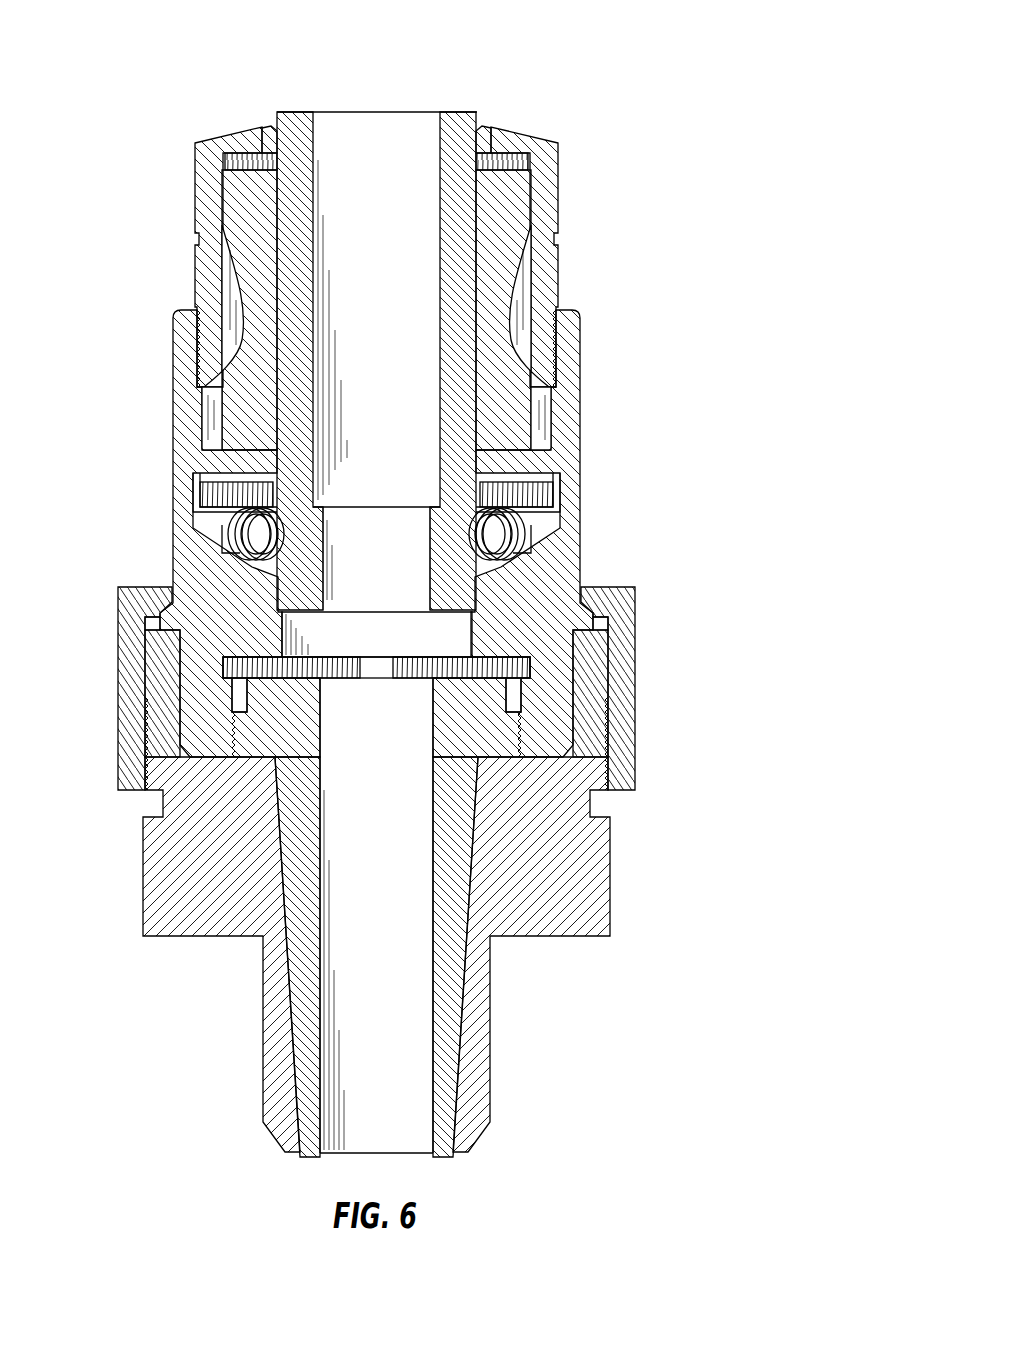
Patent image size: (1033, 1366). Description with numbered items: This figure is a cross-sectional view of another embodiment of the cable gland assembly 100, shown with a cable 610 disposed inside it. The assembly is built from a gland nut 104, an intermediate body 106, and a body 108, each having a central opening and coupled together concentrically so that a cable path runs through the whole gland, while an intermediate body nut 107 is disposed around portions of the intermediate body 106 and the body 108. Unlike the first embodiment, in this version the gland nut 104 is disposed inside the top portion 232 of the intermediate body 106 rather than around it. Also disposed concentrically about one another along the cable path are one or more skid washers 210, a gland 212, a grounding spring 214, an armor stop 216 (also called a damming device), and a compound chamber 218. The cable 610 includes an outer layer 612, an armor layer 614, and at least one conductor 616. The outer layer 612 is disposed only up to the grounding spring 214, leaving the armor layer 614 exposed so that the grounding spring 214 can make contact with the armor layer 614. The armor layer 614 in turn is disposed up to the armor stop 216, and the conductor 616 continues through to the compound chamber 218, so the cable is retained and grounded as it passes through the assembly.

The cable gland assembly 100 is at (688, 52).
The gland nut 104 is at (558, 190).
The intermediate body 106 is at (580, 424).
The intermediate body nut 107 is at (635, 698).
The body 108 is at (610, 875).
The skid washer 210 is at (507, 165).
The gland 212 is at (505, 260).
The grounding spring 214 is at (207, 517).
The armor stop 216 is at (237, 667).
The compound chamber 218 is at (443, 952).
The top portion 232 is at (175, 365).
The cable 610 is at (351, 104).
The outer layer 612 is at (390, 394).
The armor layer 614 is at (430, 575).
The conductor 616 is at (378, 668).